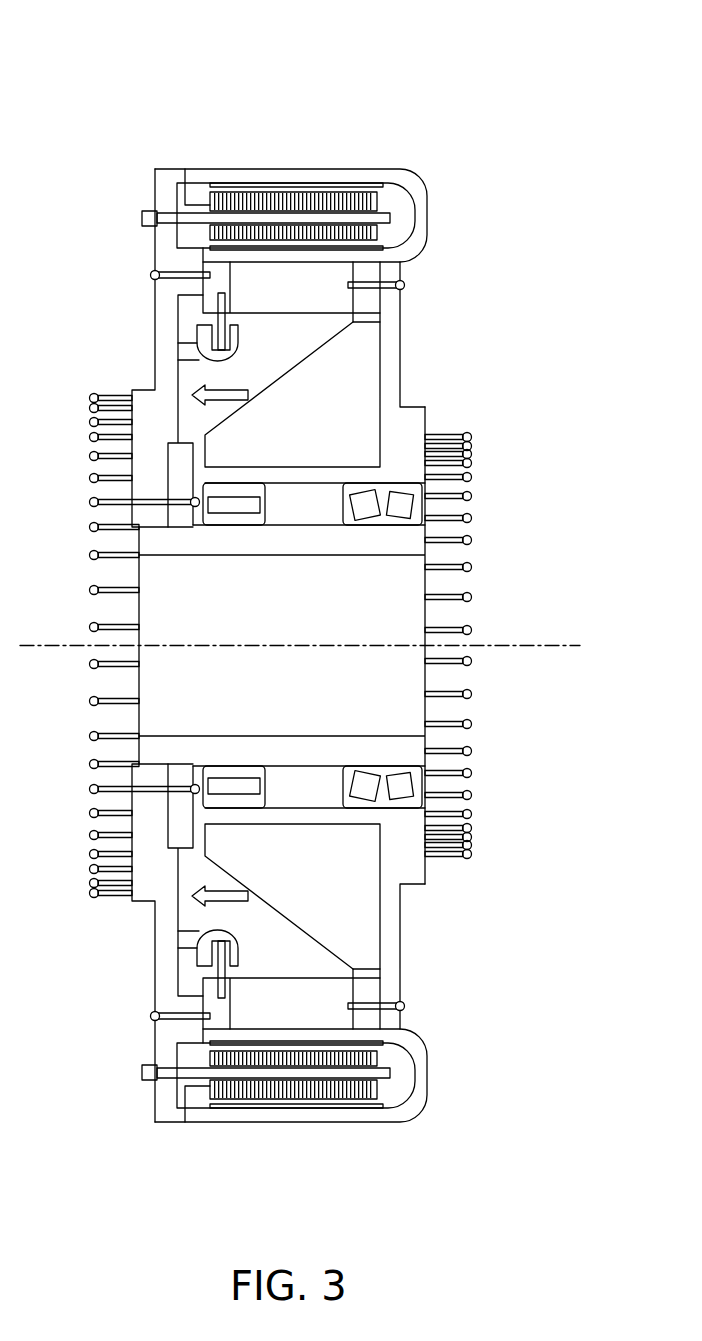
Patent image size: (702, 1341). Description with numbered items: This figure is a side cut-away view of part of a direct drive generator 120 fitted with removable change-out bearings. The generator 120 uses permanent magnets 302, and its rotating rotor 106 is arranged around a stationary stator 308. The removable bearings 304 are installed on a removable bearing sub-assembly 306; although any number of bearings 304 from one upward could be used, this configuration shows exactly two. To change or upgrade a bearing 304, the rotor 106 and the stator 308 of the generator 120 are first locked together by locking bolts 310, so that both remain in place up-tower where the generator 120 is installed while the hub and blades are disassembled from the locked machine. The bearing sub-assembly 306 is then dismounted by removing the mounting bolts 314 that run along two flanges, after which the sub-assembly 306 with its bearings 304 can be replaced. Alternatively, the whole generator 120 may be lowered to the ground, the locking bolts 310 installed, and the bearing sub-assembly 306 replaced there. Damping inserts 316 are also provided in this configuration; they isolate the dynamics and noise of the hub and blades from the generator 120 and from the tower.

The generator 120 is at (503, 66).
The rotor 106 is at (427, 215).
The permanent magnets 302 is at (393, 203).
The bearings 304 is at (433, 510).
The bearing sub-assembly 306 is at (138, 612).
The stator 308 is at (153, 240).
The locking bolts 310 is at (151, 275).
The mounting bolts 314 is at (404, 283).
The damping inserts 316 is at (368, 300).